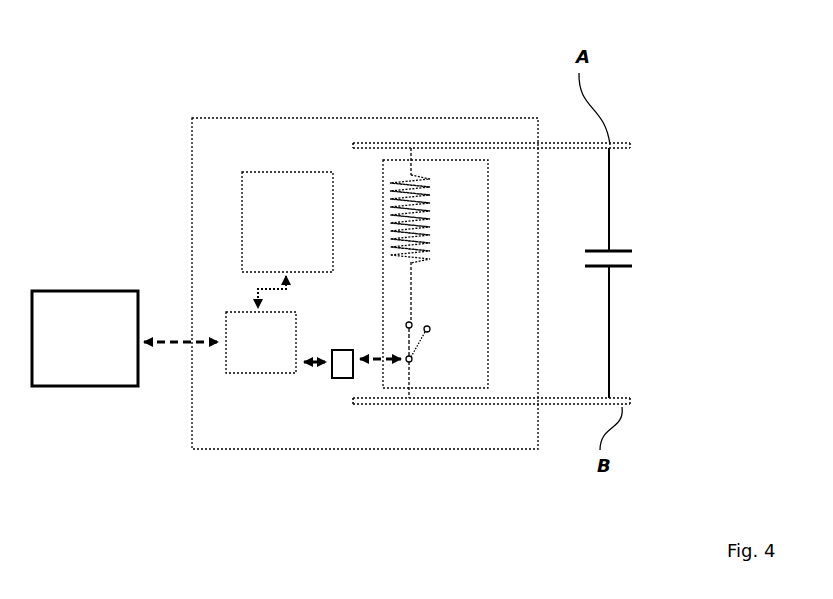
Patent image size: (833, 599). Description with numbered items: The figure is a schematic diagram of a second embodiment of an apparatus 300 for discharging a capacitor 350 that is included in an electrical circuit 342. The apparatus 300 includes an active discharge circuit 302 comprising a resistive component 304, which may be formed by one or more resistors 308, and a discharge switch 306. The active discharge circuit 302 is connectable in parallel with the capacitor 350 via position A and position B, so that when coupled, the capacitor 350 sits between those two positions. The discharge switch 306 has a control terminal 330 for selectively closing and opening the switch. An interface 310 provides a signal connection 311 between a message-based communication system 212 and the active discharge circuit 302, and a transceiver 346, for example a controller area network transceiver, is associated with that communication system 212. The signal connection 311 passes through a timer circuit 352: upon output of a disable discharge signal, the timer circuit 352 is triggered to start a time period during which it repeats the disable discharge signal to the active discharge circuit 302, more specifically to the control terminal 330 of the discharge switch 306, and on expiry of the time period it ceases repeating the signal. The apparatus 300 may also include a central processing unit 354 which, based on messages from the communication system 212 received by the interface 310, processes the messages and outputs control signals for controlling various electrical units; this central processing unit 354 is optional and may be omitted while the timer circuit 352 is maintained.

The apparatus 300 is at (160, 113).
The active discharge circuit 302 is at (383, 261).
The resistive component 304 is at (436, 215).
The discharge switch 306 is at (430, 344).
The resistor 308 is at (393, 198).
The interface 310 is at (273, 382).
The signal connection 311 is at (176, 357).
The message-based communication system 212 is at (84, 356).
The control terminal 330 is at (410, 365).
The electrical circuit 342 is at (613, 296).
The transceiver 346 is at (247, 360).
The capacitor 350 is at (624, 259).
The timer circuit 352 is at (340, 380).
The central processing unit 354 is at (258, 233).